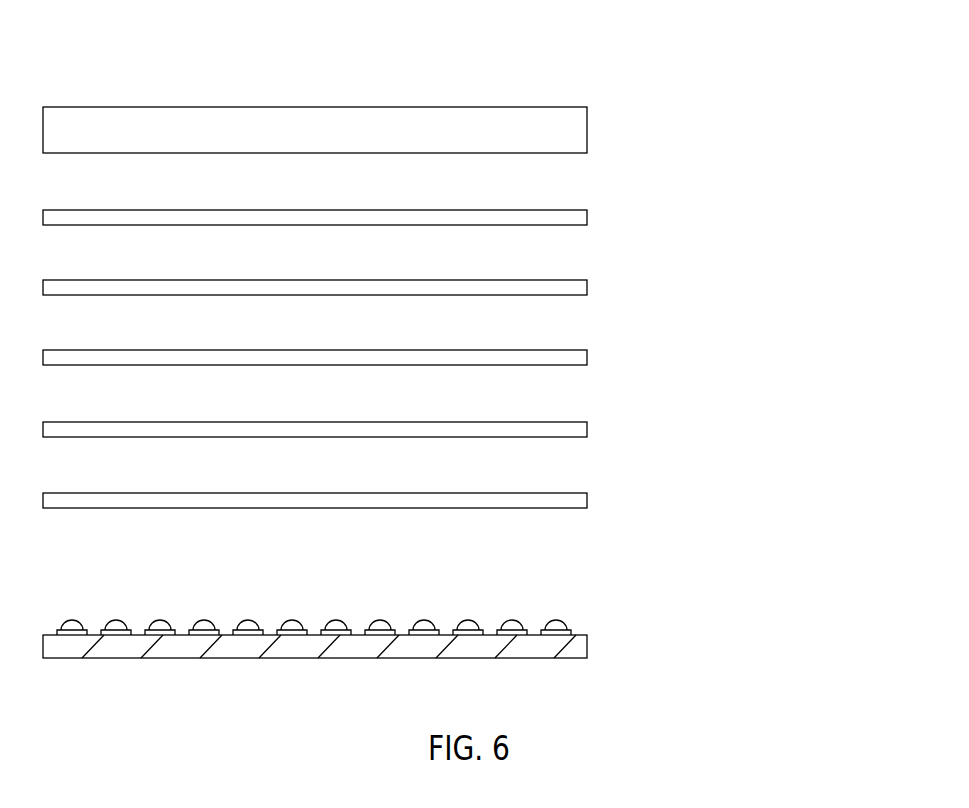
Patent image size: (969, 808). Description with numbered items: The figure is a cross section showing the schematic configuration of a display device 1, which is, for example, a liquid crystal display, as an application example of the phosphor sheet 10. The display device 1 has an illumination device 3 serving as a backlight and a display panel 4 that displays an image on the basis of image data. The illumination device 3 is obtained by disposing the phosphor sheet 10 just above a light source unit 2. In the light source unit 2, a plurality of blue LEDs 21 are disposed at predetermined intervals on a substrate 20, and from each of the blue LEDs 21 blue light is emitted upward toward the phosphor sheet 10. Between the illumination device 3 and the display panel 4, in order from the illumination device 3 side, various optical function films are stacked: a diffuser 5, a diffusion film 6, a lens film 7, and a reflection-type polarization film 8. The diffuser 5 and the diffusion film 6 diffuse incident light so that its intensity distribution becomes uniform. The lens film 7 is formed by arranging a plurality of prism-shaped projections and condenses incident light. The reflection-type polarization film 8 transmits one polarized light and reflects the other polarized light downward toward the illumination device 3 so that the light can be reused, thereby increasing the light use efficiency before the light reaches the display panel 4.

The display device 1 is at (565, 52).
The light source unit 2 is at (653, 583).
The illumination device 3 is at (696, 488).
The display panel 4 is at (578, 128).
The diffuser 5 is at (578, 427).
The diffusion film 6 is at (578, 355).
The lens film 7 is at (578, 285).
The reflection-type polarization film 8 is at (578, 215).
The phosphor sheet 10 is at (578, 498).
The substrate 20 is at (580, 650).
The blue LEDs 21 is at (558, 610).